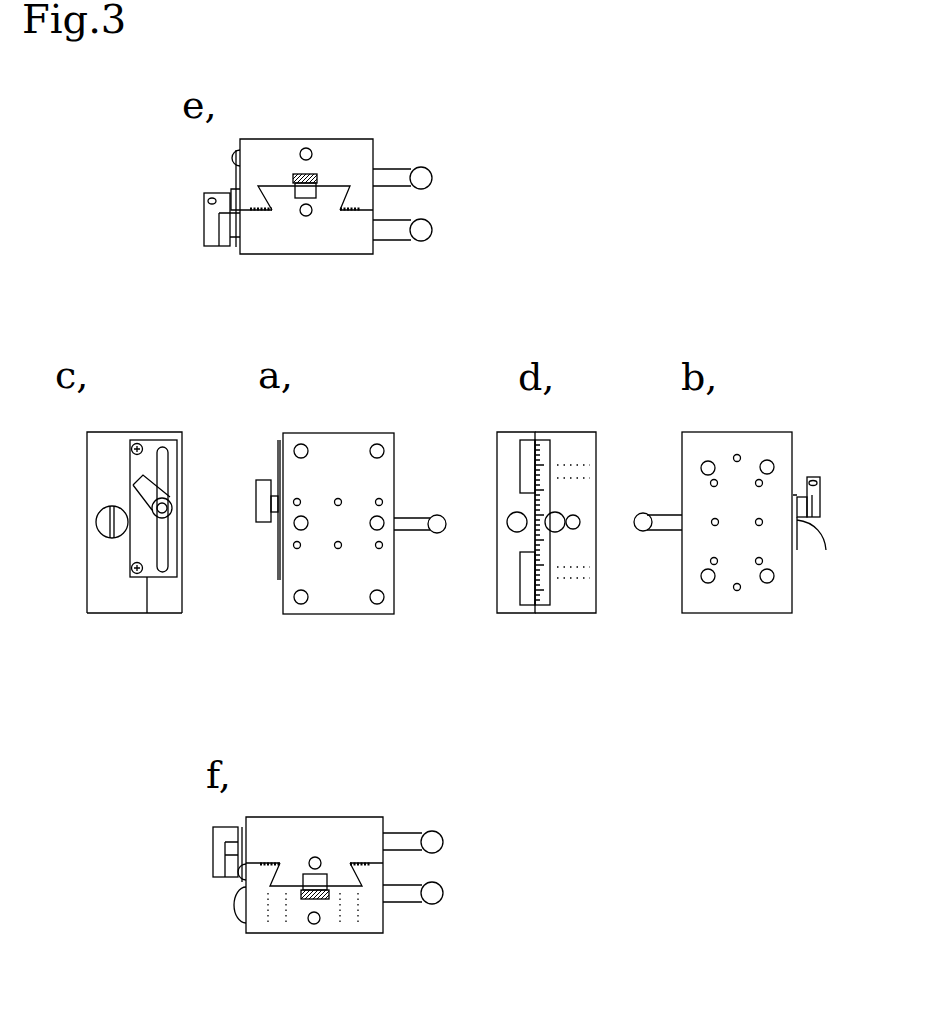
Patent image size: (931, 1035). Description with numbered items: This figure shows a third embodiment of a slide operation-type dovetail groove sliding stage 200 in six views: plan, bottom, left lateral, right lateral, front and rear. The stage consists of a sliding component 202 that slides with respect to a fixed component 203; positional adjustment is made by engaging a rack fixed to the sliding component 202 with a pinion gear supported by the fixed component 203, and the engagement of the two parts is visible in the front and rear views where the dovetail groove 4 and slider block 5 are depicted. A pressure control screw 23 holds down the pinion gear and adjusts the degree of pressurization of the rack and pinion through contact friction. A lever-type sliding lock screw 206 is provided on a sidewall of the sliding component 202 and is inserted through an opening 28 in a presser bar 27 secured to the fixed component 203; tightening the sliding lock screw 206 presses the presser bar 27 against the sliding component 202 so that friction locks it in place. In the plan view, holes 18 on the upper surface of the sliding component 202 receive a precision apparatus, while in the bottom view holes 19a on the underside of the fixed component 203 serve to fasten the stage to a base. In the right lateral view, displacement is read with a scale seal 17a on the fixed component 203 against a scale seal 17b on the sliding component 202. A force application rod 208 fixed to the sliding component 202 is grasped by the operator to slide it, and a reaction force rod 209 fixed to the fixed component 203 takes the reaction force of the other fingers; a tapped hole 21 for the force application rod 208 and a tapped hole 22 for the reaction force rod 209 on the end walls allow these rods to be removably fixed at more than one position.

The slide operation-type dovetail groove sliding stage 200 is at (462, 135).
The sliding component 202 is at (348, 228).
The fixed component 203 is at (337, 147).
The dovetail groove 4 is at (285, 190).
The slider block 5 is at (337, 195).
The tapped hole for force application rod 21 is at (306, 216).
The tapped hole for reaction force rod 22 is at (306, 148).
The force application rod 208 is at (433, 229).
The reaction force rod 209 is at (433, 178).
The sliding lock screw 206 is at (205, 215).
The pressure control screw 23 is at (102, 518).
The presser bar 27 is at (152, 447).
The opening 28 is at (163, 543).
The holes for mounting a precision apparatus 18 is at (377, 444).
The holes for fixedly fastening to a base 19a is at (708, 462).
The scale seal 17a is at (547, 595).
The scale seal 17b is at (521, 468).